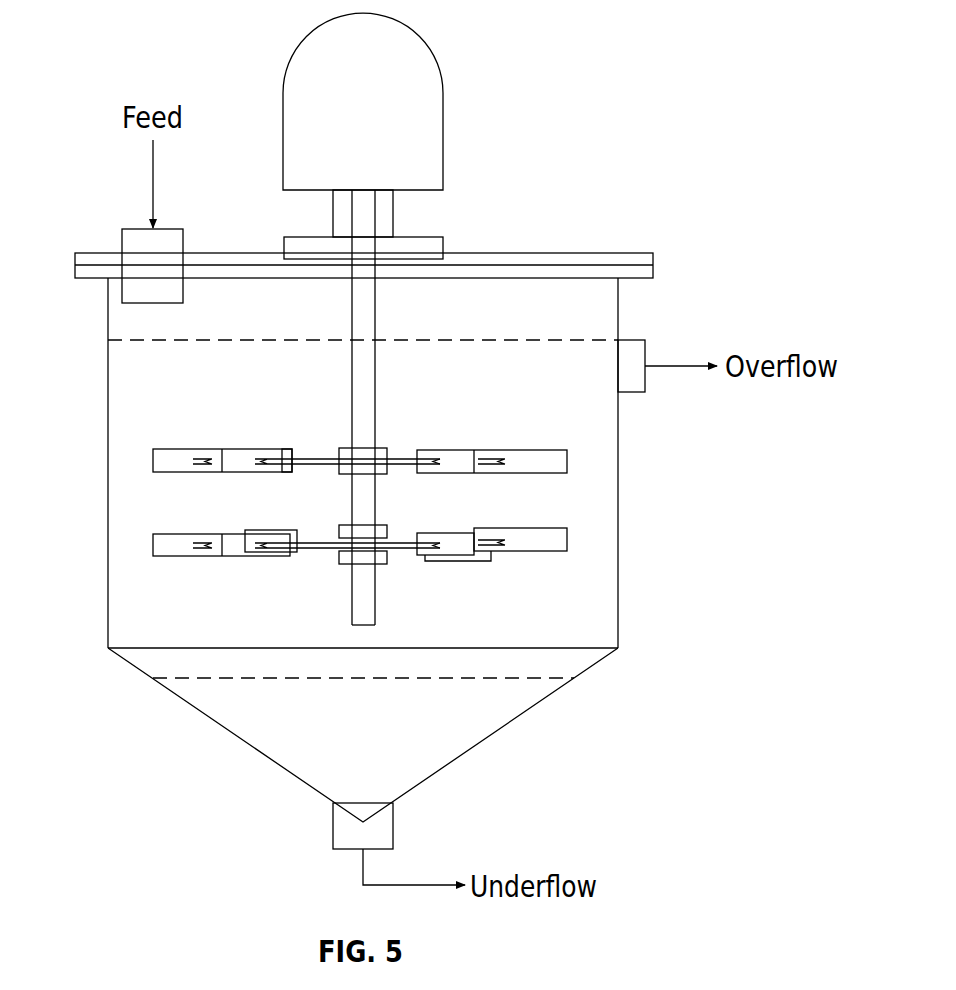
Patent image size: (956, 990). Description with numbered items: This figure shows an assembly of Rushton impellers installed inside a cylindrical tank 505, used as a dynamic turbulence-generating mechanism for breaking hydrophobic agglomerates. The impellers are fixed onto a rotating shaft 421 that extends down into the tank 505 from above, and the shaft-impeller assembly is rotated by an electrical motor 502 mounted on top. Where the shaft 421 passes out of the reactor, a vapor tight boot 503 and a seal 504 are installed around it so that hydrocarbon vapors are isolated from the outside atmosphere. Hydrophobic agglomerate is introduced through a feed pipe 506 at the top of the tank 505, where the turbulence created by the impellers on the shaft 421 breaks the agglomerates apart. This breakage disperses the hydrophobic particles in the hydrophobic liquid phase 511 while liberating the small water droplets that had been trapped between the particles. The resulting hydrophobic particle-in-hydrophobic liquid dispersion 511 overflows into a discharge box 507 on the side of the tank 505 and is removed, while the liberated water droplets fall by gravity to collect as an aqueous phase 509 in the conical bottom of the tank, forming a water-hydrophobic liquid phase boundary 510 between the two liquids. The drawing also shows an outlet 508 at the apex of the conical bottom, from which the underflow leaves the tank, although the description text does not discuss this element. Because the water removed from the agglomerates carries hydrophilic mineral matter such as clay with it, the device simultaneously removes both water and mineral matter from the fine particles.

The rotating shaft 421 is at (350, 436).
The electrical motor 502 is at (443, 71).
The vapor tight boot 503 is at (393, 229).
The seal 504 is at (443, 250).
The cylindrical tank 505 is at (618, 612).
The feed pipe 506 is at (122, 243).
The discharge box 507 is at (645, 380).
The underflow outlet 508 is at (333, 826).
The aqueous phase 509 is at (292, 746).
The water-hydrophobic liquid phase boundary 510 is at (535, 680).
The hydrophobic liquid phase 511 is at (596, 489).